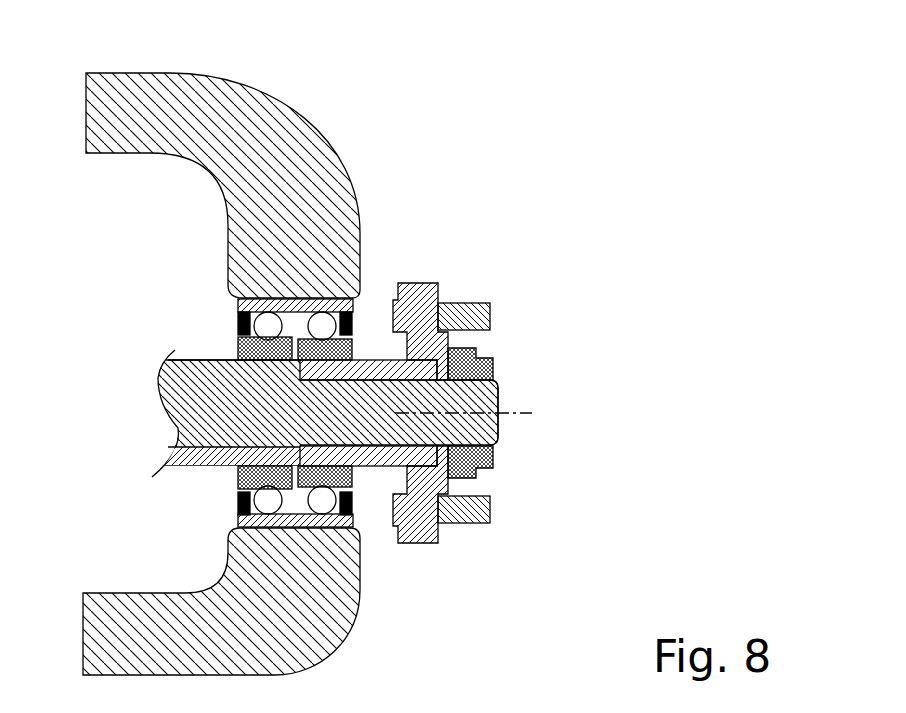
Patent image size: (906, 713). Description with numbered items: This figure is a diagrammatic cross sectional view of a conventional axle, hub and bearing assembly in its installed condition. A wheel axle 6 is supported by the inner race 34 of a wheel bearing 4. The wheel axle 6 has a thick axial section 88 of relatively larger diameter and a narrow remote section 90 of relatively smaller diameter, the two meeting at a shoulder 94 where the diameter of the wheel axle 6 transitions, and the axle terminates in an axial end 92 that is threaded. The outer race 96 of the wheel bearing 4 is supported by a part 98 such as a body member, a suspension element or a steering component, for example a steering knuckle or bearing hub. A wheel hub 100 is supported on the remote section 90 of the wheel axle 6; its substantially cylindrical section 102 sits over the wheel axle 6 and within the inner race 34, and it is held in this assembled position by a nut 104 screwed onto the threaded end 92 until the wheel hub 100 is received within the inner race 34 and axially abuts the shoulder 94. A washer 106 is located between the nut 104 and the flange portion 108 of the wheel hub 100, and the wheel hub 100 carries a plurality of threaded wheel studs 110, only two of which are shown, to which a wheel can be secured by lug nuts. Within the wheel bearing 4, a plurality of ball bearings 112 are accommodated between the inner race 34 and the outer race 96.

The wheel bearing 4 is at (205, 497).
The wheel axle 6 is at (205, 413).
The inner race 34 is at (240, 352).
The thick axial section 88 is at (185, 374).
The narrow remote section 90 is at (445, 402).
The axial end 92 is at (490, 424).
The shoulder 94 is at (205, 443).
The outer race 96 is at (243, 303).
The part 98 is at (291, 133).
The wheel hub 100 is at (413, 292).
The cylindrical section 102 is at (363, 467).
The nut 104 is at (493, 468).
The washer 106 is at (475, 355).
The flange portion 108 is at (418, 548).
The threaded wheel studs 110 is at (465, 315).
The ball bearings 112 is at (265, 500).